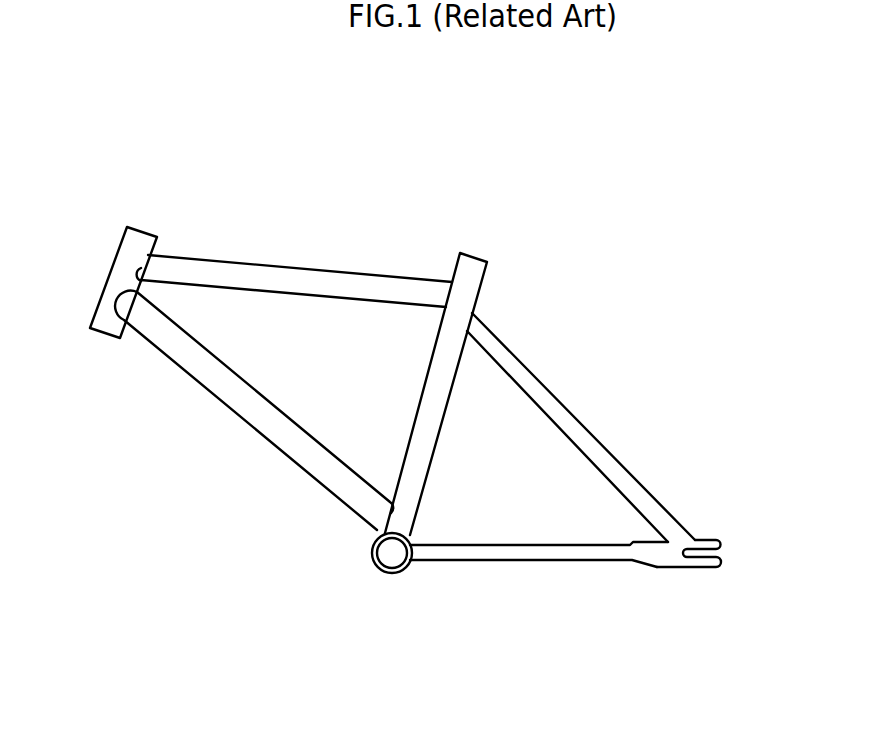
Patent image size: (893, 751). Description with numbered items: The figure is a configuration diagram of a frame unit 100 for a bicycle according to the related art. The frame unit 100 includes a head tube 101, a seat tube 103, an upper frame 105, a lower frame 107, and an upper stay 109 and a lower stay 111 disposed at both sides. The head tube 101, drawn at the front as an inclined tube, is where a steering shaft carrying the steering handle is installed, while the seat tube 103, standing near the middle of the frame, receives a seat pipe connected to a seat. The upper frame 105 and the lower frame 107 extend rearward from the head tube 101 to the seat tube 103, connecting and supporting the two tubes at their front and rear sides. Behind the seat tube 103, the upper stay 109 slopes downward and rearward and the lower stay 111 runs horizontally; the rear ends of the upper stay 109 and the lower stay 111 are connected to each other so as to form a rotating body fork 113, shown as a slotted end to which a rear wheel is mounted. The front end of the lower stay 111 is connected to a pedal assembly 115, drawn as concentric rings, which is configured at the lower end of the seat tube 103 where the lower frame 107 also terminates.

The frame unit 100 is at (592, 270).
The head tube 101 is at (114, 276).
The seat tube 103 is at (470, 257).
The upper frame 105 is at (268, 267).
The lower frame 107 is at (270, 428).
The upper stay 109 is at (595, 437).
The lower stay 111 is at (522, 561).
The rotating body fork 113 is at (704, 541).
The pedal assembly 115 is at (373, 566).